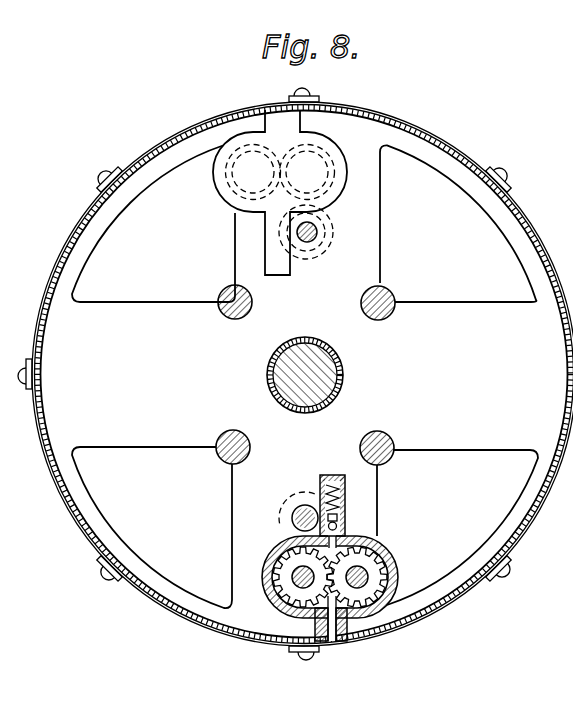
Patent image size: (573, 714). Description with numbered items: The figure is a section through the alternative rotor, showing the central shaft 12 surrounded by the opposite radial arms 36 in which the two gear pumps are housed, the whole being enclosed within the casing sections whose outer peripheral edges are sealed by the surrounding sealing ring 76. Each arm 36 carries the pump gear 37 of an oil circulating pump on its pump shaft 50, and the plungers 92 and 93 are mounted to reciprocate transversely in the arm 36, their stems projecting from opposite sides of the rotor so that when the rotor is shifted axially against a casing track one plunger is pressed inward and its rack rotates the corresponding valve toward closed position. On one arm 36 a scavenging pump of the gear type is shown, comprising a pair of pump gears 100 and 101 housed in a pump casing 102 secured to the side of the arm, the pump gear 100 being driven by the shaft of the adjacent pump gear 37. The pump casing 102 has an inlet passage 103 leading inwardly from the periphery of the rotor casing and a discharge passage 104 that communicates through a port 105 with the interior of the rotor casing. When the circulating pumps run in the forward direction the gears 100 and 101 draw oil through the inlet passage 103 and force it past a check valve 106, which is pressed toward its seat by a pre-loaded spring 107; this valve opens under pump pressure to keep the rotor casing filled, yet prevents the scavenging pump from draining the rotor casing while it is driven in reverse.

The sealing ring 76 is at (161, 149).
The radial arm 36 is at (372, 250).
The plunger 93 is at (224, 317).
The plunger 92 is at (373, 314).
The shaft 12 is at (298, 353).
The pump casing 102 is at (342, 193).
The pump gear 37 is at (313, 248).
The pump shaft 50 is at (298, 232).
The pump gear 100 is at (292, 585).
The pump gear 101 is at (368, 597).
The discharge passage 104 is at (347, 532).
The check valve 106 is at (345, 512).
The pre-loaded spring 107 is at (344, 493).
The port 105 is at (300, 512).
The inlet passage 103 is at (333, 630).